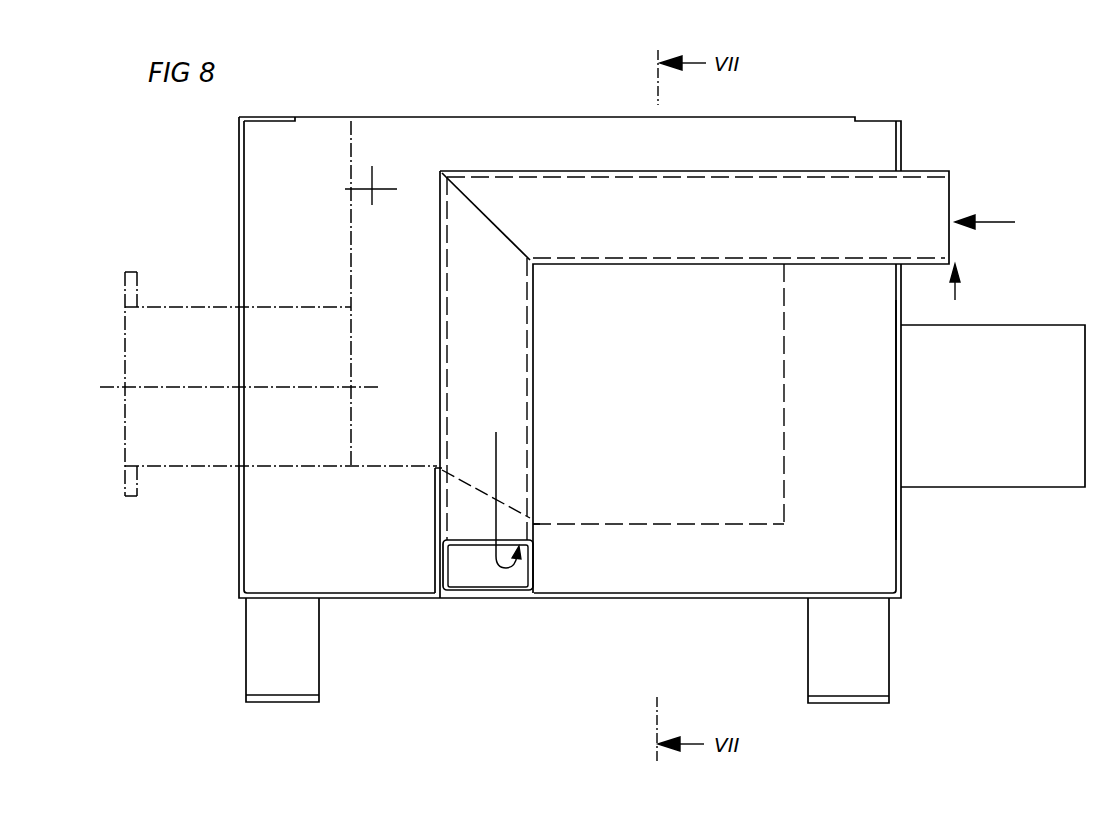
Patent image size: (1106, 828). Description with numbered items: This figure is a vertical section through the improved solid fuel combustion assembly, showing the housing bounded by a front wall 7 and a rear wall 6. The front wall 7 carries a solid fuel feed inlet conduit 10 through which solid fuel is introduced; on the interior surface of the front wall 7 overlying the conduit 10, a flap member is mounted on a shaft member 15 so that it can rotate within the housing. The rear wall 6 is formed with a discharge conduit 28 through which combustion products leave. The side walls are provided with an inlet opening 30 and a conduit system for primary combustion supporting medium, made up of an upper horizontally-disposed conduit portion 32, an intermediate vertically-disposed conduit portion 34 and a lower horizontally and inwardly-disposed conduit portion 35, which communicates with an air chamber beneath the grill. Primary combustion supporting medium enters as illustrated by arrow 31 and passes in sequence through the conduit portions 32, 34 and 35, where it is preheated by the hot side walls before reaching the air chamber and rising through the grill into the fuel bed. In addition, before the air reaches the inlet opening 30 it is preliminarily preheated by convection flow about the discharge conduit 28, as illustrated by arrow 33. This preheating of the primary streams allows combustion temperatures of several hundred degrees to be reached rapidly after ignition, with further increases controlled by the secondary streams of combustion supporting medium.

The rear wall 6 is at (242, 227).
The front wall 7 is at (898, 530).
The solid fuel feed inlet conduit 10 is at (172, 443).
The shaft member 15 is at (374, 189).
The discharge conduit 28 is at (1048, 352).
The inlet opening 30 is at (952, 192).
The arrow 31 is at (985, 222).
The upper horizontally-disposed conduit portion 32 is at (857, 183).
The arrow 33 is at (957, 292).
The intermediate vertically-disposed conduit portion 34 is at (462, 213).
The lower horizontally and inwardly-disposed conduit portion 35 is at (470, 566).